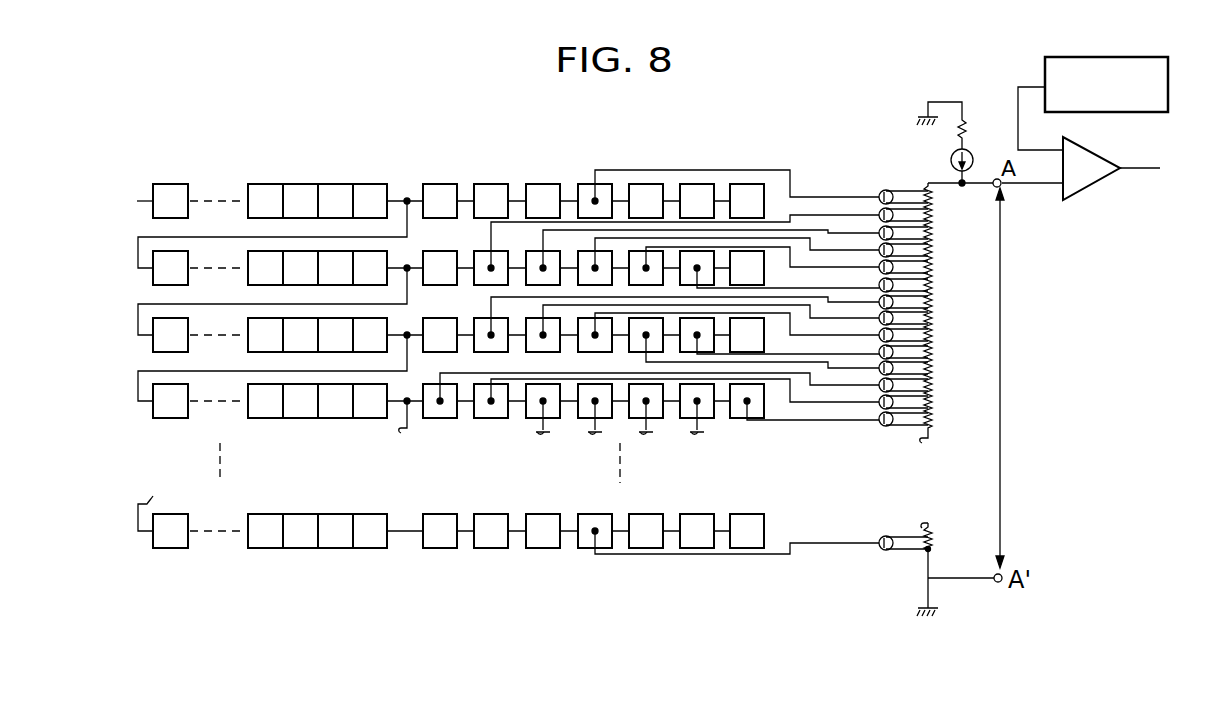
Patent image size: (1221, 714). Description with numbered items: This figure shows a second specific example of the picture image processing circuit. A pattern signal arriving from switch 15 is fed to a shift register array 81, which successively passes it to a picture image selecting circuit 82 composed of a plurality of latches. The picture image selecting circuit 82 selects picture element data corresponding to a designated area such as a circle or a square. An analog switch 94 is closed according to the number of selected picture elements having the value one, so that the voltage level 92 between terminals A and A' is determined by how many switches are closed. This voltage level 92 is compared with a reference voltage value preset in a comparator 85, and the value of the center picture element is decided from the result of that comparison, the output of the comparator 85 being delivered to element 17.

The shift register array 81 is at (312, 184).
The picture image selecting circuit 82 is at (767, 566).
The comparator 85 is at (1111, 159).
The voltage level 92 is at (1001, 357).
The analog switch 94 is at (865, 562).
The switch SW 15 is at (100, 201).
The output to 17 is at (1167, 169).